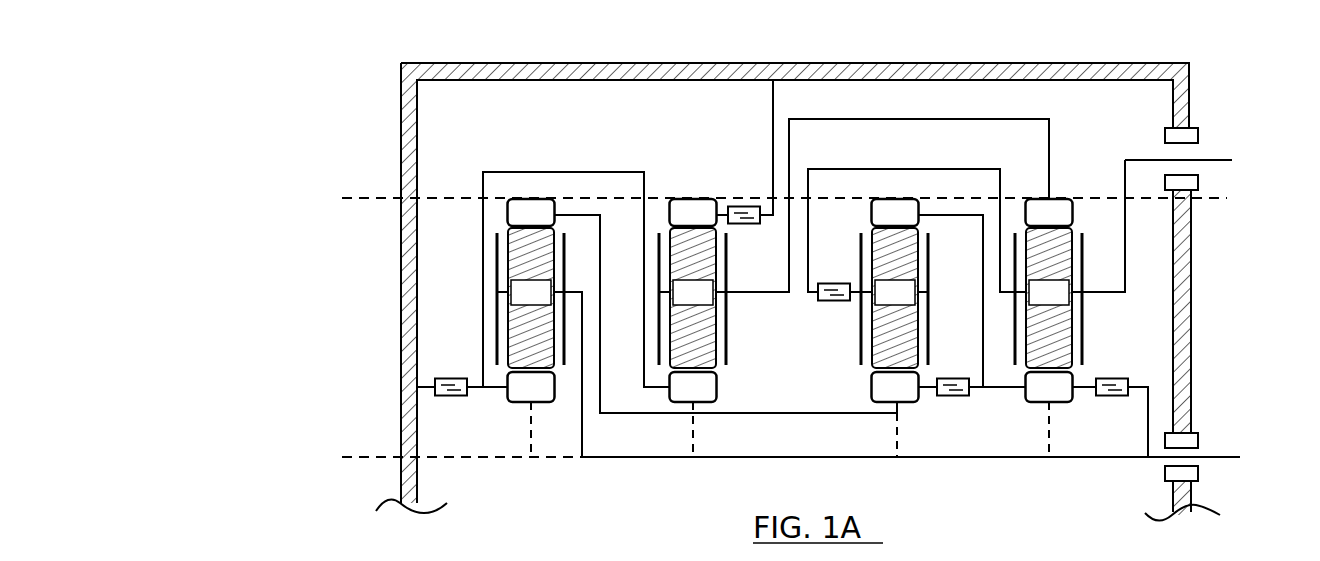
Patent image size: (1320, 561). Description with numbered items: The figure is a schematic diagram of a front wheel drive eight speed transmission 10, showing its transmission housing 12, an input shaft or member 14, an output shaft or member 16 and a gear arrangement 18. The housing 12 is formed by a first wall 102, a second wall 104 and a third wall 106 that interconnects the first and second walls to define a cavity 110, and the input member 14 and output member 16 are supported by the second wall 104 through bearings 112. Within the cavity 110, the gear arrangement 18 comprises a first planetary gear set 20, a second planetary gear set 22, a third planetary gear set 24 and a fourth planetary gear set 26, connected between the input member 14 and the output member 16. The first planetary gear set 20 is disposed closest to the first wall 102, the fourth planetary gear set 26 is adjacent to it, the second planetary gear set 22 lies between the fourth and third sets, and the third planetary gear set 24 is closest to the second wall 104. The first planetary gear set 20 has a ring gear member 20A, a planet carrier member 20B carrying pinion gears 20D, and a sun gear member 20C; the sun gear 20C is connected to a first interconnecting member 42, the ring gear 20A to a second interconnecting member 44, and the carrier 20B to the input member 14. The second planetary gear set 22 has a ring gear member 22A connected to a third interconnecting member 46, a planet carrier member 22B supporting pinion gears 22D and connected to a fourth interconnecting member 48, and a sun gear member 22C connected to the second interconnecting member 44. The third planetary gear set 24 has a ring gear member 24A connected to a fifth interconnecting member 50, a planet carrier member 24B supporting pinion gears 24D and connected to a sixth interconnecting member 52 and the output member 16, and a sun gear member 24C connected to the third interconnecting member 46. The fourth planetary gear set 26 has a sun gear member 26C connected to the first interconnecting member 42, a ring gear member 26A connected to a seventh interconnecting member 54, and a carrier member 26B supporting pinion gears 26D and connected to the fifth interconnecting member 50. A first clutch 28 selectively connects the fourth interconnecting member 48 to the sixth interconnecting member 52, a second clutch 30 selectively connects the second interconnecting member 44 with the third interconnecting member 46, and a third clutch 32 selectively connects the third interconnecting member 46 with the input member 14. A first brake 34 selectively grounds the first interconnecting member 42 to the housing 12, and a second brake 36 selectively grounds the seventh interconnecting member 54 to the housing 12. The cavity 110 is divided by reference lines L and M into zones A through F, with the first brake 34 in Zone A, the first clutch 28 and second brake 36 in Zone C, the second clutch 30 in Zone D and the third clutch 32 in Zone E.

The transmission 10 is at (1020, 39).
The transmission housing 12 is at (778, 265).
The input shaft or member 14 is at (1217, 457).
The output shaft or member 16 is at (1217, 160).
The gear arrangement 18 is at (870, 95).
The first planetary gear set 20 is at (498, 256).
The ring gear member 20A is at (531, 212).
The planet carrier member 20B is at (488, 239).
The sun gear member 20C is at (531, 387).
The planet or pinion gears 20D is at (531, 292).
The second planetary gear set 22 is at (918, 269).
The ring gear member 22A is at (895, 212).
The planet carrier member 22B is at (930, 342).
The sun gear member 22C is at (895, 387).
The planet or pinion gears 22D is at (895, 292).
The third planetary gear set 24 is at (1070, 268).
The ring gear member 24A is at (1049, 212).
The planet carrier member 24B is at (1085, 246).
The sun gear member 24C is at (1049, 387).
The planet or pinion gears 24D is at (1049, 292).
The fourth planetary gear set 26 is at (720, 265).
The ring gear member 26A is at (693, 212).
The carrier member 26B is at (728, 351).
The sun gear member 26C is at (693, 387).
The planet or pinion gears 26D is at (693, 292).
The first clutch 28 is at (829, 283).
The second clutch 30 is at (951, 395).
The third clutch 32 is at (1115, 378).
The first brake 34 is at (446, 378).
The second brake 36 is at (746, 224).
The first shaft or interconnecting member 42 is at (571, 172).
The second shaft or interconnecting member 44 is at (600, 235).
The third shaft or interconnecting member 46 is at (945, 217).
The fourth shaft or interconnecting member 48 is at (850, 301).
The fifth shaft or interconnecting member 50 is at (942, 119).
The sixth shaft or interconnecting member 52 is at (828, 169).
The seventh shaft or interconnecting member 54 is at (741, 206).
The first wall or structural member 102 is at (402, 294).
The second wall or structural member 104 is at (1191, 283).
The third wall or structural member 106 is at (610, 63).
The space or cavity 110 is at (668, 80).
The bearings 112 is at (1196, 128).